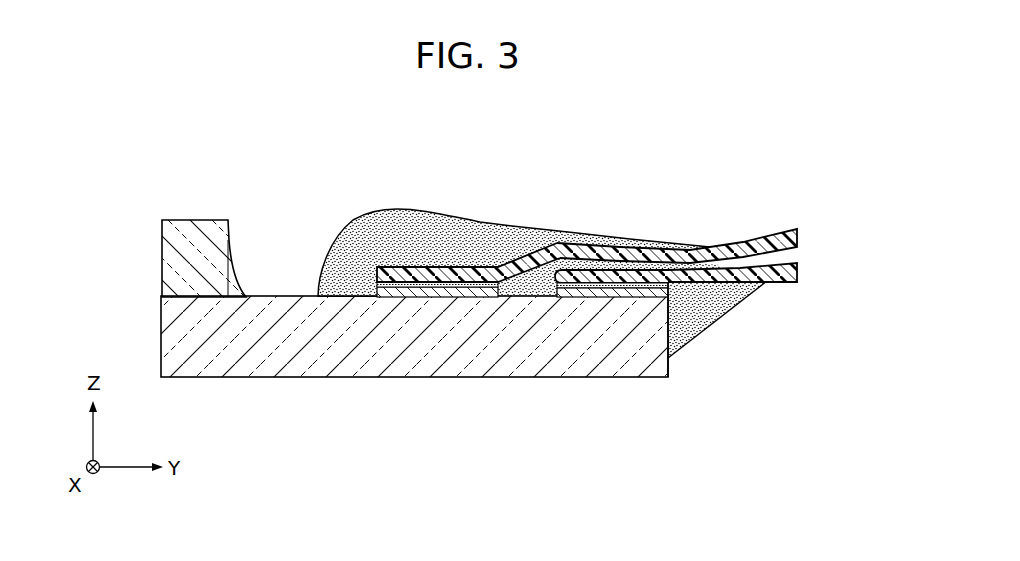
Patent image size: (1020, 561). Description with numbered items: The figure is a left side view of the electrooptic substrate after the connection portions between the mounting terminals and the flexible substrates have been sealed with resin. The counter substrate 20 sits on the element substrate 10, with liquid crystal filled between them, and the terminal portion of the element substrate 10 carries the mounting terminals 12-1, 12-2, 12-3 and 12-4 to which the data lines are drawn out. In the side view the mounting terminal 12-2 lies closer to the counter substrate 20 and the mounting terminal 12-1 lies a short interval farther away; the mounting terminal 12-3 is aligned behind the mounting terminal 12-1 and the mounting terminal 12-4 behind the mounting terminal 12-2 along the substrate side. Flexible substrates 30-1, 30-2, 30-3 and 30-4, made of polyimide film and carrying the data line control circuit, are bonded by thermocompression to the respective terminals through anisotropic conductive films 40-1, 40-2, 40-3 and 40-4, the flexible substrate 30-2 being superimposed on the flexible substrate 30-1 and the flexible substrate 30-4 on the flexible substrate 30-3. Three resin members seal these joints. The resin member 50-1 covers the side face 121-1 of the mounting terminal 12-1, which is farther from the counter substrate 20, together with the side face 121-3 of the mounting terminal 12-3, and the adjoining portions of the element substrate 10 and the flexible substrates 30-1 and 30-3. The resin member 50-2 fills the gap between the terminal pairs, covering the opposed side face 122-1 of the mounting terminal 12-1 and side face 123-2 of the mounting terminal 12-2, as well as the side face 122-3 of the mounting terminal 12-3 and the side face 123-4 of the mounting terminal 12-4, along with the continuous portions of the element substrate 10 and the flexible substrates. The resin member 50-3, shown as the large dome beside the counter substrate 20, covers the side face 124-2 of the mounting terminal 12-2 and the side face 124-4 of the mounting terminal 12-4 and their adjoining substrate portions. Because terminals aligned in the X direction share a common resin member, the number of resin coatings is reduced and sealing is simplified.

The element substrate 10 is at (233, 373).
The counter substrate 20 is at (192, 220).
The mounting terminal 12-1 is at (629, 352).
The mounting terminal 12-2 is at (436, 366).
The mounting terminal 12-3 is at (622, 298).
The mounting terminal 12-4 is at (437, 293).
The flexible substrate 30-1 is at (760, 295).
The flexible substrate 30-2 is at (679, 226).
The flexible substrate 30-3 is at (783, 283).
The flexible substrate 30-4 is at (738, 243).
The anisotropic conductive film 40-1 is at (610, 243).
The anisotropic conductive film 40-2 is at (472, 205).
The anisotropic conductive film 40-3 is at (560, 268).
The anisotropic conductive film 40-4 is at (505, 266).
The resin member 50-1 is at (725, 305).
The resin member 50-2 is at (538, 278).
The resin member 50-3 is at (422, 212).
The side face 121-1 is at (738, 334).
The side face 121-3 is at (677, 300).
The side face 122-1 is at (599, 363).
The side face 122-3 is at (555, 285).
The side face 123-2 is at (488, 380).
The side face 123-4 is at (503, 287).
The side face 124-2 is at (384, 357).
The side face 124-4 is at (365, 298).